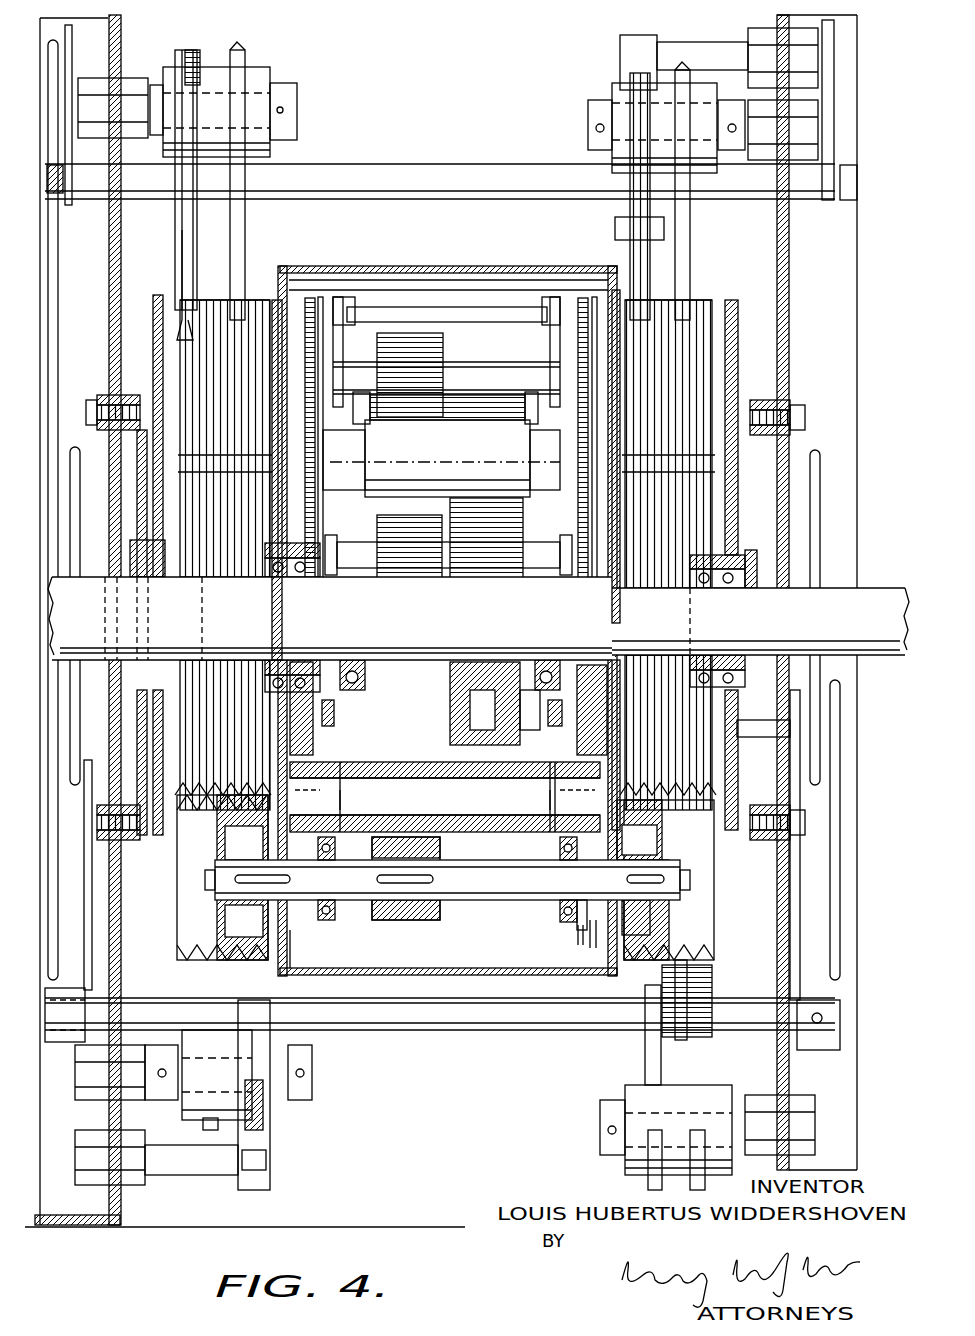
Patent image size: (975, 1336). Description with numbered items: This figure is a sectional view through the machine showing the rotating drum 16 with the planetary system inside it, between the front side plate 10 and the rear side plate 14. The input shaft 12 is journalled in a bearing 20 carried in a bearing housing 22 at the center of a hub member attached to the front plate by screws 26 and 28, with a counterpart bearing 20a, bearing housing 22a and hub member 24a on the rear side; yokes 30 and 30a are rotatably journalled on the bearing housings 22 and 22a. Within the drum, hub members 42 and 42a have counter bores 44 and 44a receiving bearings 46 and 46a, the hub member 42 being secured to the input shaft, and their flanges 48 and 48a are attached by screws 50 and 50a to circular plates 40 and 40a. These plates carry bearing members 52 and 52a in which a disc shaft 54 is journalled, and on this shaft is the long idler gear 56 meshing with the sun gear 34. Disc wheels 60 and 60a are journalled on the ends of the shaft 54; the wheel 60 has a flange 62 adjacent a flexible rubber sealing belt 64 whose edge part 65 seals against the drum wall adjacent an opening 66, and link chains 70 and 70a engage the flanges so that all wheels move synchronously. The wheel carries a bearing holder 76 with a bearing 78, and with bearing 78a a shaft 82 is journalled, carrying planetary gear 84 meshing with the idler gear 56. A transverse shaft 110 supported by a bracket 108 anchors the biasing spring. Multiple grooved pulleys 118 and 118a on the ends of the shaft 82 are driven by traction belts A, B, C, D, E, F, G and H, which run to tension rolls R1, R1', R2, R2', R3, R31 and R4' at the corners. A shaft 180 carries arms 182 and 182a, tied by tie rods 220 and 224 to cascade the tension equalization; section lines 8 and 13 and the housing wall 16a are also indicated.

The front side plate 10 is at (904, 30).
The input shaft 12 is at (867, 579).
The section line 13- 13 is at (234, 25).
The rear side plate 14 is at (108, 260).
The rotating drum 16 is at (346, 268).
The housing wall 16a is at (375, 926).
The bearing 20 is at (708, 580).
The bearing 20a is at (256, 593).
The bearing housing 22 is at (756, 556).
The bearing housing 22a is at (154, 548).
The hub member 24a is at (126, 693).
The screw 26 is at (800, 413).
The screw 28 is at (802, 828).
The yoke 30 is at (732, 366).
The yoke 30a is at (149, 314).
The sun gear 34 is at (448, 684).
The circular plate 40 is at (530, 438).
The circular plate 40a is at (363, 463).
The hub member 42 is at (593, 658).
The hub member 42a is at (322, 662).
The counter bore 44 is at (516, 710).
The counter bore 44a is at (358, 680).
The bearing 46 is at (518, 643).
The bearing 46a is at (360, 660).
The flange 48 is at (536, 770).
The flange 48a is at (336, 728).
The screw 50 is at (576, 798).
The screw 50a is at (327, 790).
The bearing member 52 is at (510, 794).
The bearing member 52a is at (360, 780).
The disc shaft 54 is at (452, 808).
The idler gear 56 is at (467, 400).
The disc wheel 60 is at (598, 834).
The disc wheel 60a is at (291, 878).
The flange 62 is at (580, 934).
The flexible rubber sealing belt 64 is at (592, 936).
The extending edge part 65 is at (635, 917).
The opening 66 is at (612, 878).
The link chain 70 is at (582, 298).
The link chain 70a is at (310, 296).
The bearing holder 76 is at (576, 922).
The bearing 78 is at (556, 916).
The bearing 78a is at (326, 908).
The shaft 82 is at (500, 891).
The planetary gear 84 is at (443, 339).
The bracket 108 is at (346, 305).
The transverse shaft 110 is at (448, 305).
The multiple grooved pulley 118 is at (683, 940).
The multiple grooved pulley 118a is at (177, 893).
The shaft 180 is at (456, 1035).
The extending arm 182 is at (838, 923).
The extending arm 182a is at (95, 977).
The tie rod 220 is at (815, 688).
The tie rod 224 is at (850, 816).
The section line 8- 8 is at (497, 217).
The belt A is at (697, 1032).
The belt B is at (645, 1059).
The belt C is at (262, 1129).
The belt D is at (205, 1129).
The belt E is at (184, 54).
The belt F is at (236, 53).
The belt G is at (620, 74).
The belt H is at (690, 221).
The tension roll R1 is at (216, 1095).
The tension roll R1' is at (674, 100).
The tension roll R2 is at (698, 1095).
The tension roll R2' is at (215, 102).
The tension roll R3 is at (258, 1070).
The rod R31 is at (628, 214).
The tension roll R4' is at (158, 284).